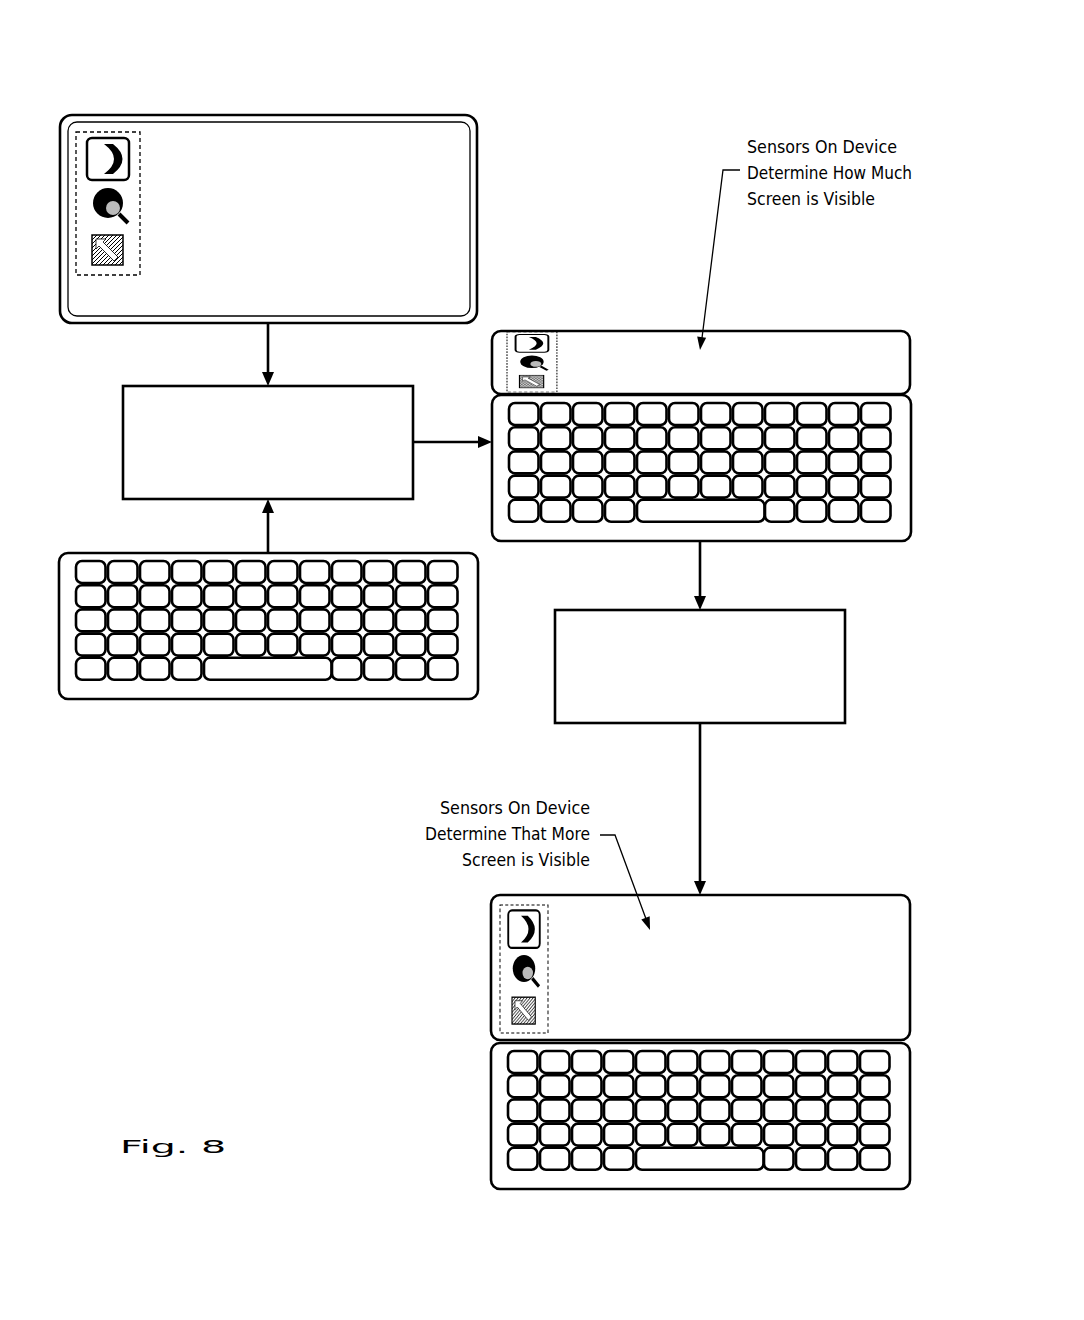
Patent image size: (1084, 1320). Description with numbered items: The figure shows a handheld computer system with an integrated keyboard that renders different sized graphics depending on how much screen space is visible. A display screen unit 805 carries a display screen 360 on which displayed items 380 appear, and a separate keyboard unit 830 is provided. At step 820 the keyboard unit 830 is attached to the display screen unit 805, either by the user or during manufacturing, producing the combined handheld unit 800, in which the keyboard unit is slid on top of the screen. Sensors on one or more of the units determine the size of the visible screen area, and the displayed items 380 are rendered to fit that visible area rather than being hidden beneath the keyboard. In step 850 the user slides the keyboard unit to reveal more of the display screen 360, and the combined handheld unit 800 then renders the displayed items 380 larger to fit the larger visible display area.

The display screen 360 is at (715, 1004).
The displayed items 380 is at (109, 132).
The combined handheld unit 800 is at (793, 878).
The display screen unit 805 is at (301, 100).
The keyboard and screen units combined step 820 is at (253, 489).
The keyboard unit 830 is at (283, 716).
The user slides keyboard unit step 850 is at (685, 701).